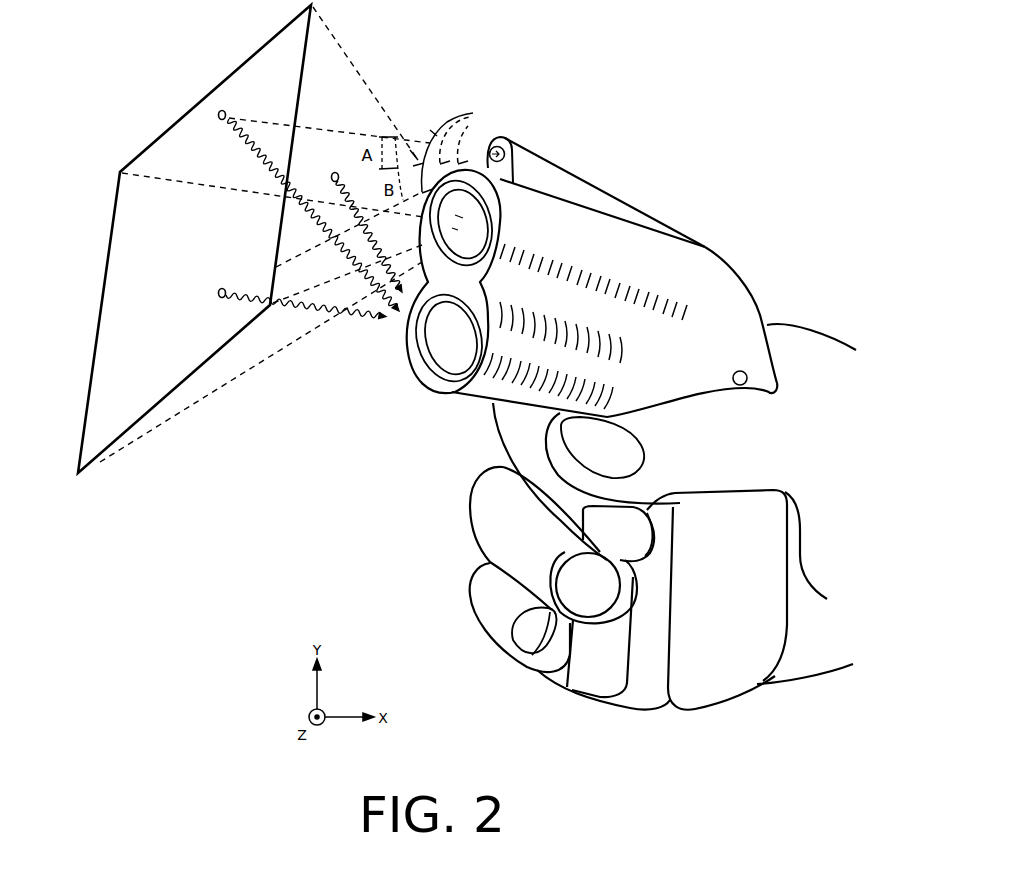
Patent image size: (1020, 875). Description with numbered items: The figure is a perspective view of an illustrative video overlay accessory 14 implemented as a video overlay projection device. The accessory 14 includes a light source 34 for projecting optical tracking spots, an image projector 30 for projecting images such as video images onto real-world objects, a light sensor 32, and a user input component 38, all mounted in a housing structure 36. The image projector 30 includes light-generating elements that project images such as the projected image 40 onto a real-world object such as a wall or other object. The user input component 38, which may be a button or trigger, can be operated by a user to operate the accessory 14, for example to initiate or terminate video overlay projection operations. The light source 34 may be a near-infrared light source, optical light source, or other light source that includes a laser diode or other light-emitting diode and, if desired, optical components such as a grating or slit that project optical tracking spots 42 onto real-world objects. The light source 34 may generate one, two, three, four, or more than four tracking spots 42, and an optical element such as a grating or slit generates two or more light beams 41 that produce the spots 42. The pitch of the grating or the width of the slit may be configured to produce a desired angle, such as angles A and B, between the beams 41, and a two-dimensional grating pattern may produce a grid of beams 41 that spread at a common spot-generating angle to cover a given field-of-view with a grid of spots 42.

The accessory 14 is at (740, 91).
The image projector 30 is at (540, 220).
The light sensor 32 is at (513, 343).
The light source 34 is at (527, 148).
The housing structure 36 is at (705, 682).
The user input component 38 is at (578, 677).
The projected image 40 is at (126, 212).
The light beams 41 is at (473, 113).
The optical tracking spots 42 is at (220, 113).